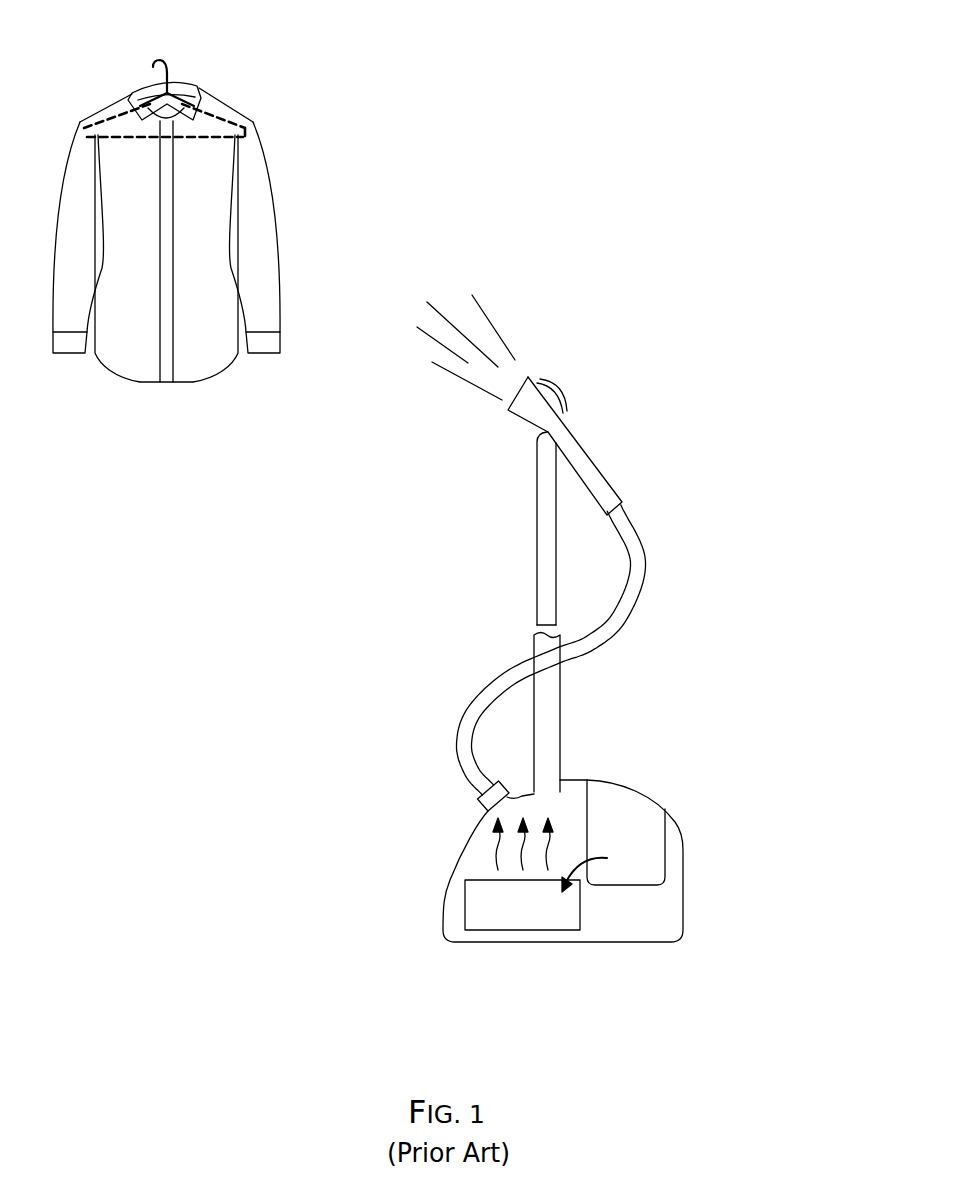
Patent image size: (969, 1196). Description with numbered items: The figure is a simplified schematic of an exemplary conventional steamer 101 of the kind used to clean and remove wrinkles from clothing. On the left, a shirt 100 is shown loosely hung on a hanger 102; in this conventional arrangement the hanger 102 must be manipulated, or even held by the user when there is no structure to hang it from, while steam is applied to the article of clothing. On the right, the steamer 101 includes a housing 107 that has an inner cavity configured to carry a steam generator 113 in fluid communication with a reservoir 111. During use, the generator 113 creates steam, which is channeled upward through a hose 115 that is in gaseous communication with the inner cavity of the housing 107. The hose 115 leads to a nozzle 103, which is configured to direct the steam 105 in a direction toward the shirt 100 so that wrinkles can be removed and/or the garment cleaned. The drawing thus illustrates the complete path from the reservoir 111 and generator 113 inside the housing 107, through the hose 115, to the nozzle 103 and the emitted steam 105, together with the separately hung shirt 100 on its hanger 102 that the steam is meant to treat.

The shirt 100 is at (224, 199).
The steamer 101 is at (624, 533).
The hanger 102 is at (163, 58).
The nozzle 103 is at (593, 462).
The steam 105 is at (535, 297).
The housing 107 is at (453, 862).
The reservoir 111 is at (665, 847).
The steam generator 113 is at (582, 917).
The hose 115 is at (597, 640).